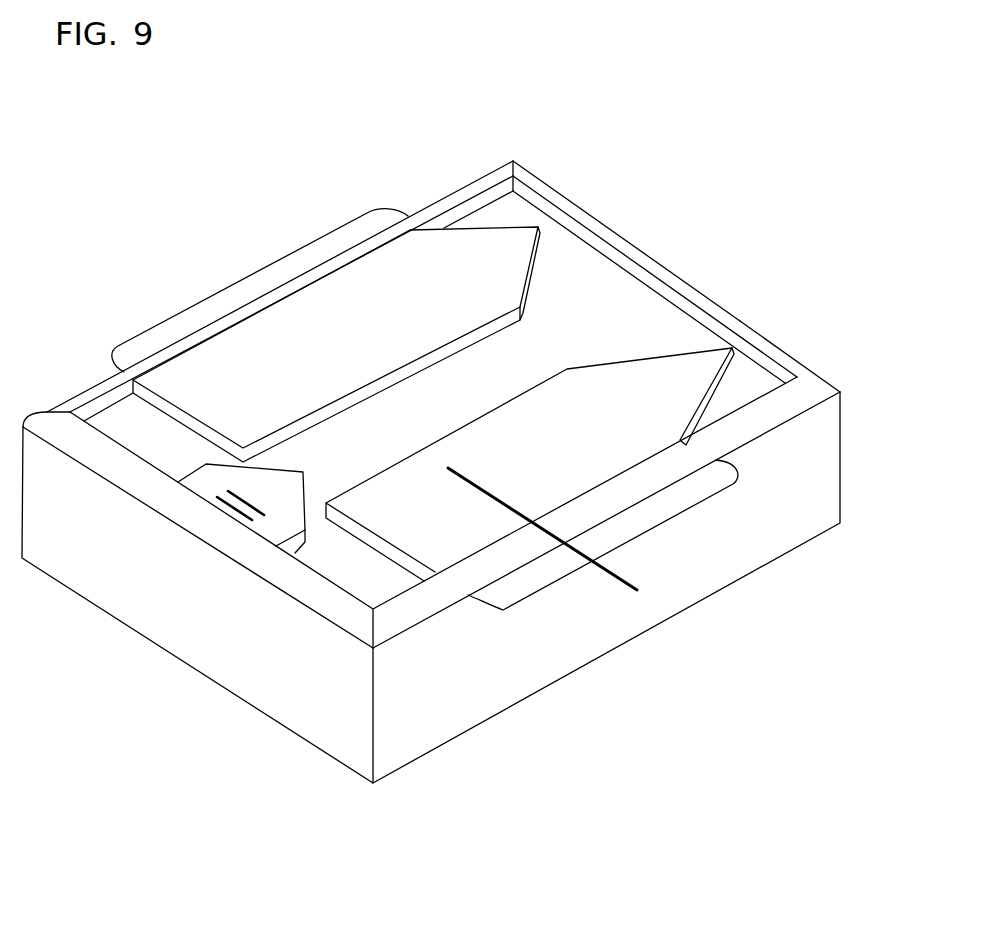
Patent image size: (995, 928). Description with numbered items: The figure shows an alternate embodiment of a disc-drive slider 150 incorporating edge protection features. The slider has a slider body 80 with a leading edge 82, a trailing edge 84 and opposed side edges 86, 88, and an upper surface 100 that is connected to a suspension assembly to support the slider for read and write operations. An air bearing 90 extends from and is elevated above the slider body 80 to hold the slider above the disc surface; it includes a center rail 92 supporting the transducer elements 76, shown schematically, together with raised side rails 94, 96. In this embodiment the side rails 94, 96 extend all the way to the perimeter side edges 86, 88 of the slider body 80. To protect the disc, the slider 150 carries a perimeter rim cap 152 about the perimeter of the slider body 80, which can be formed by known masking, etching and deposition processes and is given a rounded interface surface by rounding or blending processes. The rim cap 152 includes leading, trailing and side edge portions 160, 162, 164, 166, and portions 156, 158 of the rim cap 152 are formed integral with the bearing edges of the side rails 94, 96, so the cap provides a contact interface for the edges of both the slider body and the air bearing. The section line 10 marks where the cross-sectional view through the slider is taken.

The section line 10 is at (474, 482).
The transducer elements 76 is at (232, 507).
The slider body 80 is at (748, 385).
The leading edge 82 is at (652, 256).
The trailing edge 84 is at (297, 600).
The side edge 86 is at (77, 397).
The side edge 88 is at (437, 617).
The air bearing 90 is at (433, 298).
The center rail 92 is at (257, 501).
The side rail 94 is at (405, 316).
The side rail 96 is at (524, 468).
The upper surface 100 is at (717, 598).
The slider 150 is at (748, 245).
The perimeter rim cap 152 is at (805, 360).
The rim cap portion 156 is at (247, 275).
The rim cap portion 158 is at (620, 548).
The leading edge portion 160 is at (727, 303).
The trailing edge portion 162 is at (353, 622).
The side edge portion 164 is at (295, 292).
The side edge portion 166 is at (653, 483).